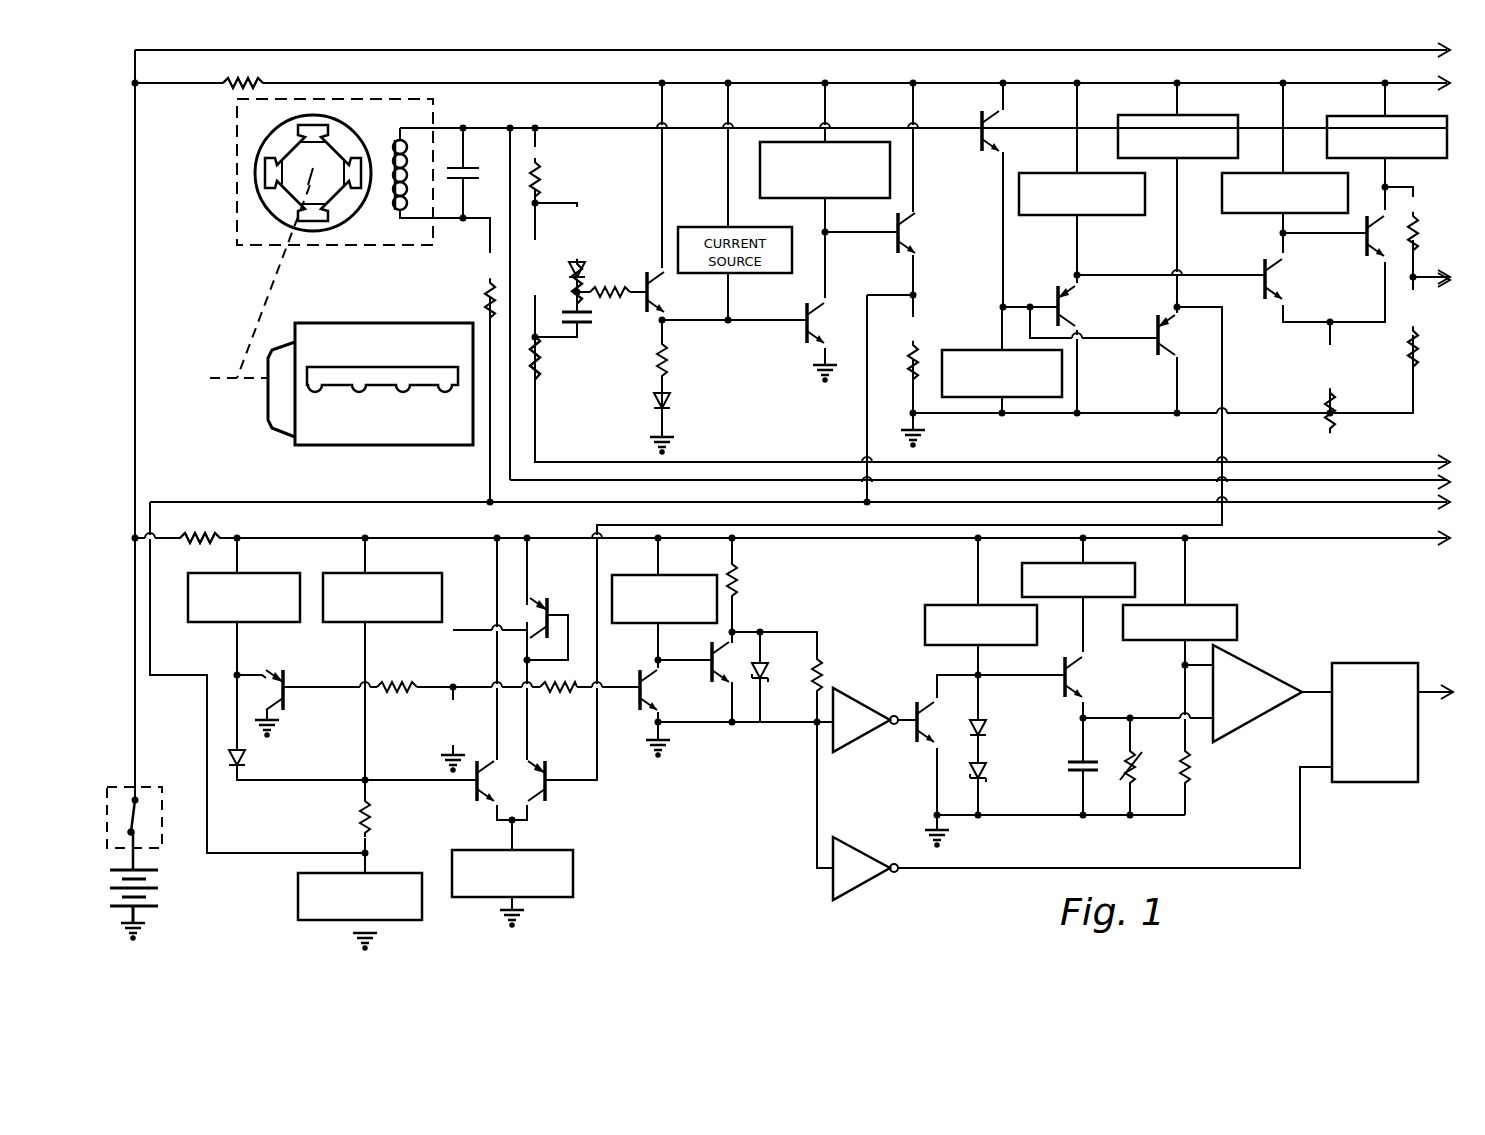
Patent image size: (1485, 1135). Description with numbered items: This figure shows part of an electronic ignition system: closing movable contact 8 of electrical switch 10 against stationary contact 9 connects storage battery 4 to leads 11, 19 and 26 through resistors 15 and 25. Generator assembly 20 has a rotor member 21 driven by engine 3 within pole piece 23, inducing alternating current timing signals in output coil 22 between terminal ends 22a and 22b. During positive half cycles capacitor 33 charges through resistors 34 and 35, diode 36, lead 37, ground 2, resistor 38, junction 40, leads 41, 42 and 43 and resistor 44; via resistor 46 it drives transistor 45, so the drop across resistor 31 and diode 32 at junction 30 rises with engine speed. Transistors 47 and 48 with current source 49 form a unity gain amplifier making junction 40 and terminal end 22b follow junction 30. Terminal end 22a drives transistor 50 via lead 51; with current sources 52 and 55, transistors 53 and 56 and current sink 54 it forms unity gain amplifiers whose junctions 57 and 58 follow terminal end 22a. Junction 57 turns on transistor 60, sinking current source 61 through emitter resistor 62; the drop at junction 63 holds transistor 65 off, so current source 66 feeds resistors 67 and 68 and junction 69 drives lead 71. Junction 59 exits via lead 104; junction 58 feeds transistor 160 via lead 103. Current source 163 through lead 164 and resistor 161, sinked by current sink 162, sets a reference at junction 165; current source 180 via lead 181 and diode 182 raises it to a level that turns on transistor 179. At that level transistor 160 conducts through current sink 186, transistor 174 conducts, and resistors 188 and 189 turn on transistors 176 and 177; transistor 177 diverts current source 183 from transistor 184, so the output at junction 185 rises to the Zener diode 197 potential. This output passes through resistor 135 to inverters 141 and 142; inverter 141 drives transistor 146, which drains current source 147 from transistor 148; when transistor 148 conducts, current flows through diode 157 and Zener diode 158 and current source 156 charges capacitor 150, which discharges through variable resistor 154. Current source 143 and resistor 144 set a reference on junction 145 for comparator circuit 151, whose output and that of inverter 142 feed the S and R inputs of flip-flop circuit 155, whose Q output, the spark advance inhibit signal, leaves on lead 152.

The positive polarity potential lead 11 is at (136, 695).
The positive polarity potential lead 19 is at (380, 84).
The current limiting resistor 15 is at (265, 83).
The electrical generator assembly 20 is at (330, 248).
The rotor member 21 is at (295, 172).
The pole piece 23 is at (272, 205).
The output coil 22 is at (390, 185).
The terminal end 22a is at (405, 130).
The terminal end 22b is at (405, 218).
The resistor 44 is at (489, 290).
The lead 43 is at (489, 462).
The internal combustion engine 3 is at (325, 323).
The stationary contact 9 is at (130, 792).
The electrical switch 10 is at (162, 795).
The movable contact 8 is at (138, 835).
The storage battery 4 is at (160, 884).
The point of reference or ground potential 2 is at (148, 923).
The resistor 34 is at (545, 165).
The resistor 35 is at (585, 225).
The diode 36 is at (585, 265).
The resistor 46 is at (612, 298).
The capacitor 33 is at (590, 325).
The NPN transistor 45 is at (662, 296).
The junction 30 is at (665, 345).
The resistor 31 is at (660, 385).
The diode 32 is at (672, 400).
The lead 37 is at (536, 388).
The junction 59 is at (512, 126).
The lead 104 is at (990, 480).
The lead 51 is at (580, 127).
The PNP transistor 47 is at (822, 326).
The NPN transistor 48 is at (913, 236).
The current source 49 is at (850, 197).
The junction 40 is at (920, 295).
The lead 41 is at (866, 385).
The lead 42 is at (795, 500).
The resistor 38 is at (918, 335).
The NPN transistor 50 is at (1000, 130).
The current source 52 is at (1035, 173).
The current source 55 is at (1128, 115).
The junction 57 is at (1080, 275).
The PNP transistor 53 is at (1064, 313).
The junction 58 is at (1177, 305).
The PNP transistor 56 is at (1165, 340).
The current sink 54 is at (1062, 385).
The lead 103 is at (1224, 345).
The NPN transistor 60 is at (1280, 280).
The current source 61 is at (1258, 173).
The junction 63 is at (1332, 322).
The common emitter resistor 62 is at (1337, 380).
The NPN transistor 65 is at (1378, 225).
The current source 66 is at (1345, 116).
The resistor 67 is at (1416, 215).
The junction 69 is at (1410, 310).
The resistor 68 is at (1416, 335).
The lead 71 is at (1425, 275).
The current limiting resistor 25 is at (215, 537).
The positive polarity potential lead 26 is at (275, 537).
The current source 180 is at (255, 622).
The lead 181 is at (236, 645).
The current source 163 is at (442, 590).
The lead 164 is at (366, 640).
The NPN transistor 176 is at (285, 680).
The diode 182 is at (248, 757).
The resistor 188 is at (398, 692).
The resistor 189 is at (560, 692).
The dual collector PNP transistor 174 is at (550, 605).
The junction 165 is at (362, 782).
The resistor 161 is at (362, 820).
The current sink 162 is at (305, 910).
The NPN transistor 179 is at (475, 790).
The NPN transistor 160 is at (550, 792).
The current sink 186 is at (575, 888).
The current source 183 is at (645, 623).
The NPN transistor 177 is at (658, 694).
The NPN transistor 184 is at (708, 657).
The junction 185 is at (735, 630).
The Zener diode 197 is at (770, 685).
The resistor 135 is at (820, 655).
The inverter circuit 141 is at (845, 690).
The inverter circuit 142 is at (845, 840).
The NPN transistor 146 is at (932, 714).
The current source 147 is at (925, 610).
The NPN transistor 148 is at (1080, 670).
The junction 145 is at (1183, 667).
The current source 156 is at (1022, 580).
The diode 157 is at (988, 725).
The Zener diode 158 is at (988, 772).
The capacitor 150 is at (1072, 775).
The variable resistor 154 is at (1140, 775).
The resistor 144 is at (1192, 772).
The current source 143 is at (1240, 623).
The voltage comparator circuit 151 is at (1252, 672).
The R-S flip-flop circuit 155 is at (1332, 746).
The lead 152 is at (1435, 685).